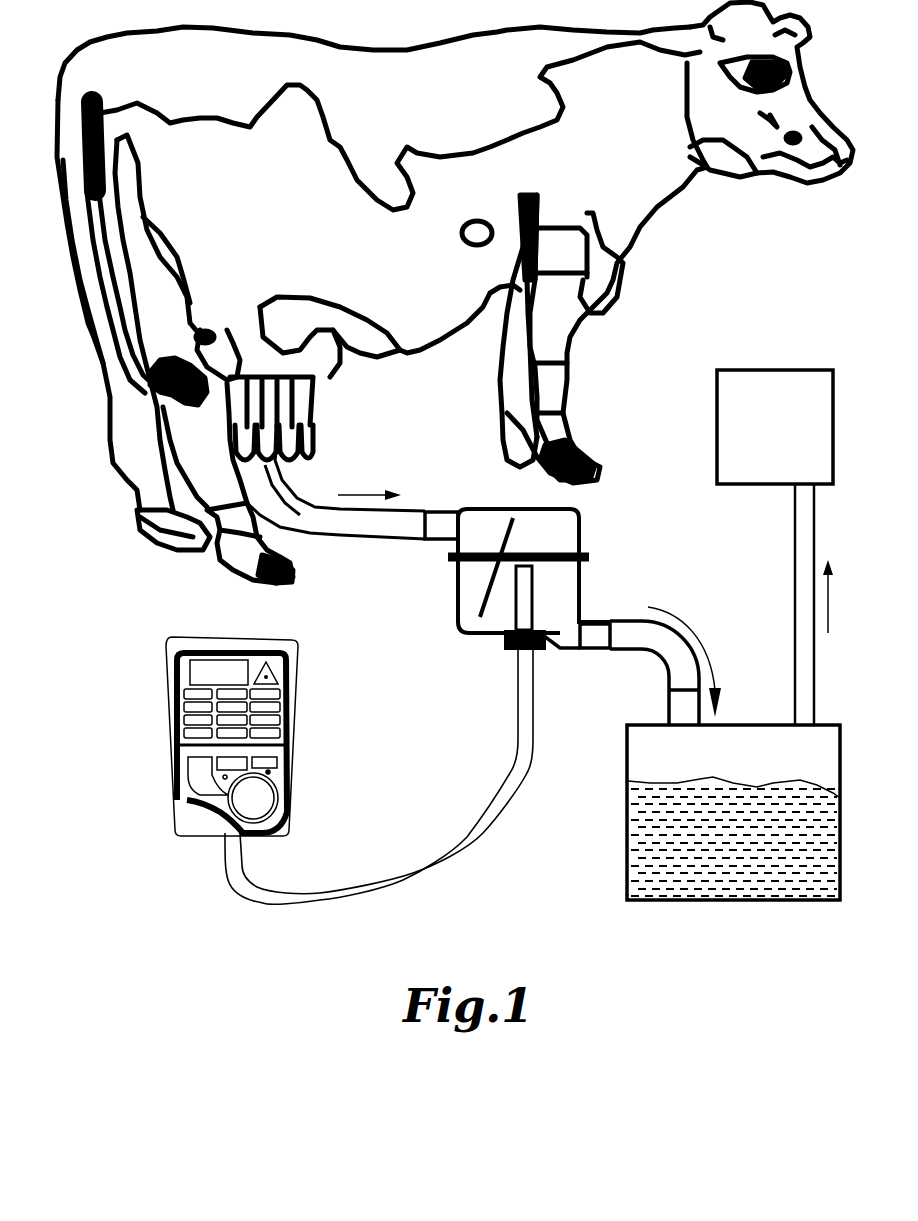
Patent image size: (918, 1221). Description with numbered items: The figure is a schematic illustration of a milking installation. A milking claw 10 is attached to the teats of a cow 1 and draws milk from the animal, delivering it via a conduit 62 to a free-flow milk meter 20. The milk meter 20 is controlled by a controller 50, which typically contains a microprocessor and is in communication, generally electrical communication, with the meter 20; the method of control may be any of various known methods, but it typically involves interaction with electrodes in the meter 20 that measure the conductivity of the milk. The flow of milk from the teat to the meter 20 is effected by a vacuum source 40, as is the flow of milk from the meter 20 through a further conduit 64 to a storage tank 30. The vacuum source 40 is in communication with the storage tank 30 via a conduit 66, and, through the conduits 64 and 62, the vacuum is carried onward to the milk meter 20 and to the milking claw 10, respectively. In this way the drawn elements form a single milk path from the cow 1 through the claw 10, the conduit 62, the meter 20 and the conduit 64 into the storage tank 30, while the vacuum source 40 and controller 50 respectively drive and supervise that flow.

The cow 1 is at (455, 292).
The milking claw 10 is at (336, 418).
The free-flow milk meter 20 is at (417, 706).
The storage tank 30 is at (675, 812).
The vacuum source 40 is at (749, 465).
The controller 50 is at (193, 770).
The conduit 62 is at (352, 540).
The conduit 64 is at (632, 687).
The conduit 66 is at (771, 604).